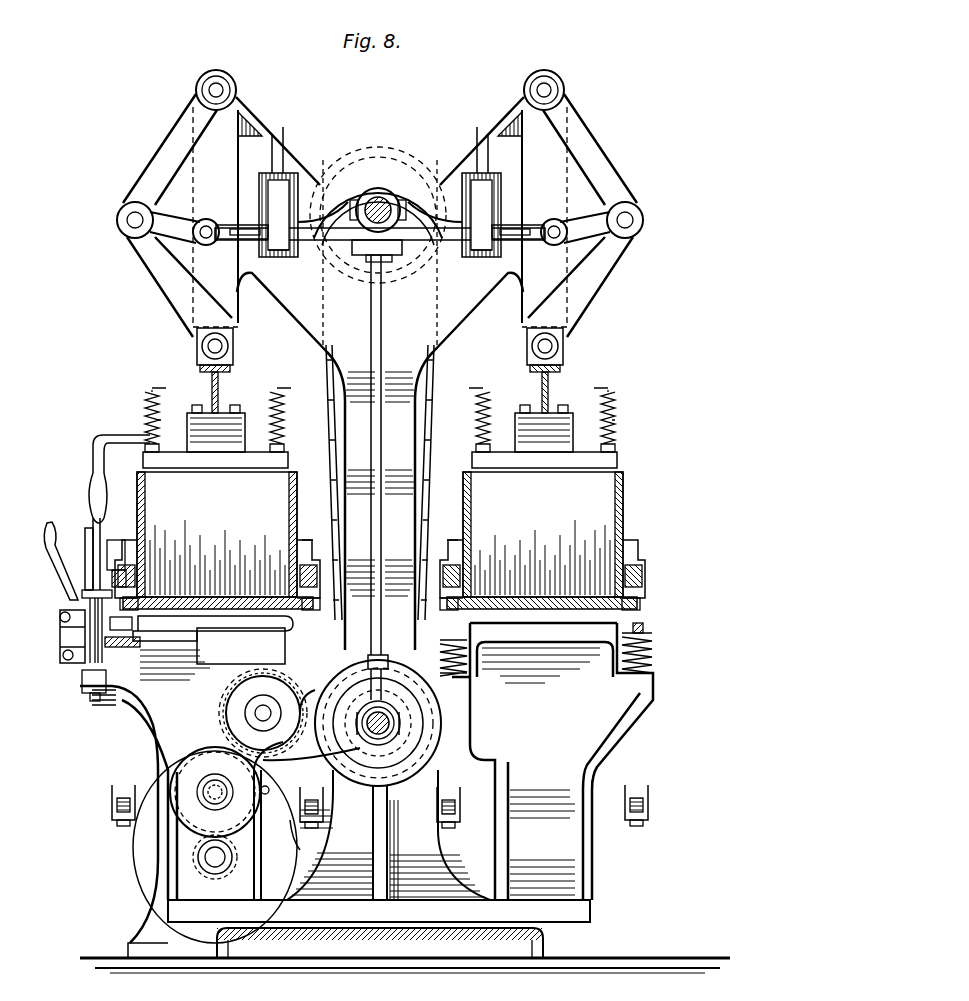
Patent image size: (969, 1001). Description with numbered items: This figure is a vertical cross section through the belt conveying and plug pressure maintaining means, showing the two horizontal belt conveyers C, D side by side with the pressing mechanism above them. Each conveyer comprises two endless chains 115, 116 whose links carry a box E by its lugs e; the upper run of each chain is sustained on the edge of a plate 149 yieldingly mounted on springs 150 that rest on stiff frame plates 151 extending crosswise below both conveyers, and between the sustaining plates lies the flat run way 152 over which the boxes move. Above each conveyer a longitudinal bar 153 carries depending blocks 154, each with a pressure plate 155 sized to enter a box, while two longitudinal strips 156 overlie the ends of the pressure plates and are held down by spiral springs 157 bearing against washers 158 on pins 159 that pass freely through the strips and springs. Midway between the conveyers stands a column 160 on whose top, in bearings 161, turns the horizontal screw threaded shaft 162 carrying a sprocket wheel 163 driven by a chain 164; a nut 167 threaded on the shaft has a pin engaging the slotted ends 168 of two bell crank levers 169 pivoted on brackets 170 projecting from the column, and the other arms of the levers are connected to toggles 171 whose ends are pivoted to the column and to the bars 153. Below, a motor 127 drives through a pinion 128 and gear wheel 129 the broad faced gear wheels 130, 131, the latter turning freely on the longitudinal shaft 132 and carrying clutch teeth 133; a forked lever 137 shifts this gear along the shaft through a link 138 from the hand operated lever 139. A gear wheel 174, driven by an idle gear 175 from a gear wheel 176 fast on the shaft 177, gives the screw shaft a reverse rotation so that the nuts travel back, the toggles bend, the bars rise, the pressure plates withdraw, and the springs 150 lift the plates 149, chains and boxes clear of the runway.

The endless chain 115 is at (318, 580).
The endless chain 116 is at (112, 800).
The motor 127 is at (134, 852).
The pinion 128 is at (200, 865).
The gear wheel 129 is at (215, 800).
The broad faced gear wheel 130 is at (228, 728).
The broad faced gear wheel 131 is at (313, 835).
The longitudinally extending shaft 132 is at (425, 720).
The clutch teeth 133 is at (395, 740).
The forked lever 137 is at (380, 655).
The link 138 is at (62, 638).
The hand operated lever 139 is at (92, 550).
The plate 149 is at (142, 588).
The spring 150 is at (117, 672).
The frame plate 151 is at (158, 722).
The run way 152 is at (222, 606).
The longitudinal bar 153 is at (222, 390).
The block 154 is at (380, 428).
The pressure plate 155 is at (240, 460).
The longitudinal strip 156 is at (150, 440).
The spiral spring 157 is at (148, 420).
The washer 158 is at (153, 392).
The pin 159 is at (160, 430).
The column 160 is at (370, 300).
The bearing 161 is at (378, 196).
The screw threaded shaft 162 is at (362, 195).
The sprocket wheel 163 is at (398, 165).
The chain 164 is at (326, 362).
The nut 167 is at (372, 247).
The slotted end 168 is at (405, 240).
The bell crank lever 169 is at (278, 245).
The bracket 170 is at (296, 185).
The toggle 171 is at (379, 203).
The gear wheel 174 is at (340, 752).
The idle gear 175 is at (262, 765).
The gear wheel 176 is at (226, 706).
The shaft 177 is at (262, 710).
The belt conveyer C is at (186, 779).
The belt conveyer D is at (618, 766).
The box E is at (380, 534).
The lug e is at (128, 542).